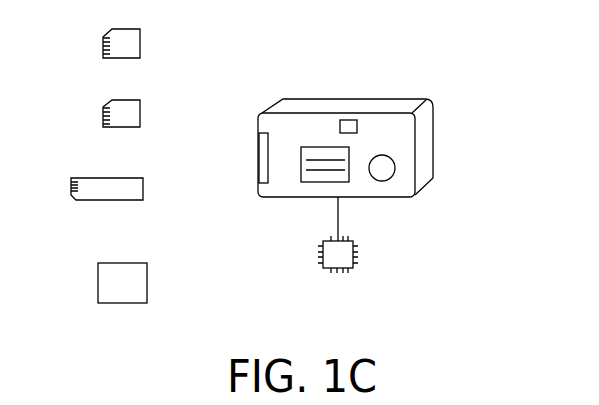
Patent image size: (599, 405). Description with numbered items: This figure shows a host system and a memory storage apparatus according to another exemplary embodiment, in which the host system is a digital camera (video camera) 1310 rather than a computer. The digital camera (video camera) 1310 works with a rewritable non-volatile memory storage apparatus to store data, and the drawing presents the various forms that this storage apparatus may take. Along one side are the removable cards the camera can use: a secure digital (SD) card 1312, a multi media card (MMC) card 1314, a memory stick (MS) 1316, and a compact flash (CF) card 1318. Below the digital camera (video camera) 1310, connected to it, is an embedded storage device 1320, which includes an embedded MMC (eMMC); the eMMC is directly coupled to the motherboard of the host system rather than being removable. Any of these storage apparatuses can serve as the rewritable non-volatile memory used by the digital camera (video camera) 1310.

The digital camera (video camera) 1310 is at (382, 148).
The secure digital (SD) card 1312 is at (154, 29).
The multi media card (MMC) card 1314 is at (154, 98).
The memory stick (MS) 1316 is at (127, 171).
The compact flash (CF) card 1318 is at (151, 267).
The embedded storage device 1320 is at (367, 254).